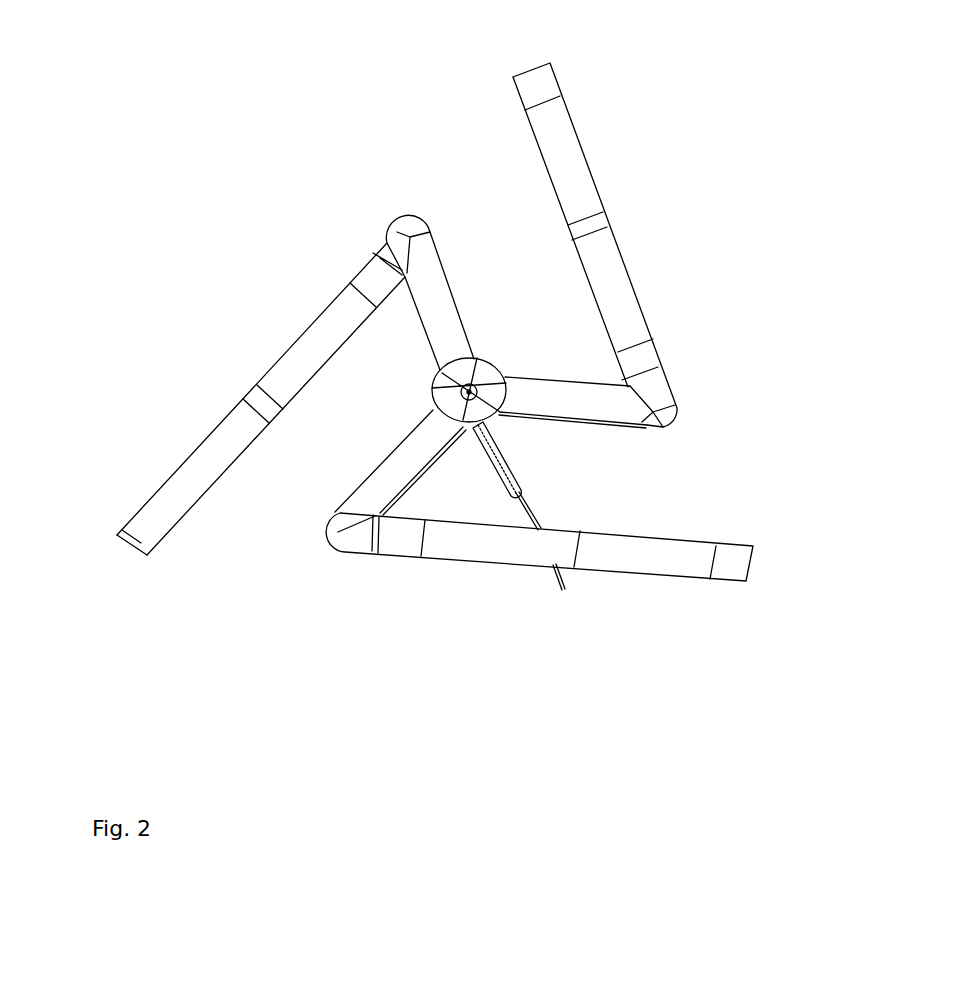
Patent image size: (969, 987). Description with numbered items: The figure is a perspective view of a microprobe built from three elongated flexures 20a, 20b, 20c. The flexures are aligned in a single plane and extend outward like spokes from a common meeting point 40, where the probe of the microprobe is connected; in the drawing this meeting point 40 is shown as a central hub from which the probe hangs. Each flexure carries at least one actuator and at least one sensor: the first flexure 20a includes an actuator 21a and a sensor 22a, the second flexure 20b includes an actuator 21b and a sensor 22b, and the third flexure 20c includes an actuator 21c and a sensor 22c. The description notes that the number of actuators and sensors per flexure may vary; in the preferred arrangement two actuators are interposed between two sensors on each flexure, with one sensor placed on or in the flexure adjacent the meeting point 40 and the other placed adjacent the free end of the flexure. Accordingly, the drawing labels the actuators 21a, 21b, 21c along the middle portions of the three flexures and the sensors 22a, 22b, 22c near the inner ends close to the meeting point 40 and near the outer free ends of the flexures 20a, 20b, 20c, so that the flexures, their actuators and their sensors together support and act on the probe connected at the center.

The flexure 20a is at (253, 373).
The actuator 21a is at (317, 328).
The sensor 22a is at (375, 265).
The flexure 20b is at (647, 222).
The actuator 21b is at (553, 160).
The sensor 22b is at (540, 95).
The flexure 20c is at (498, 582).
The actuator 21c is at (465, 530).
The sensor 22c is at (410, 532).
The meeting point 40 is at (473, 390).